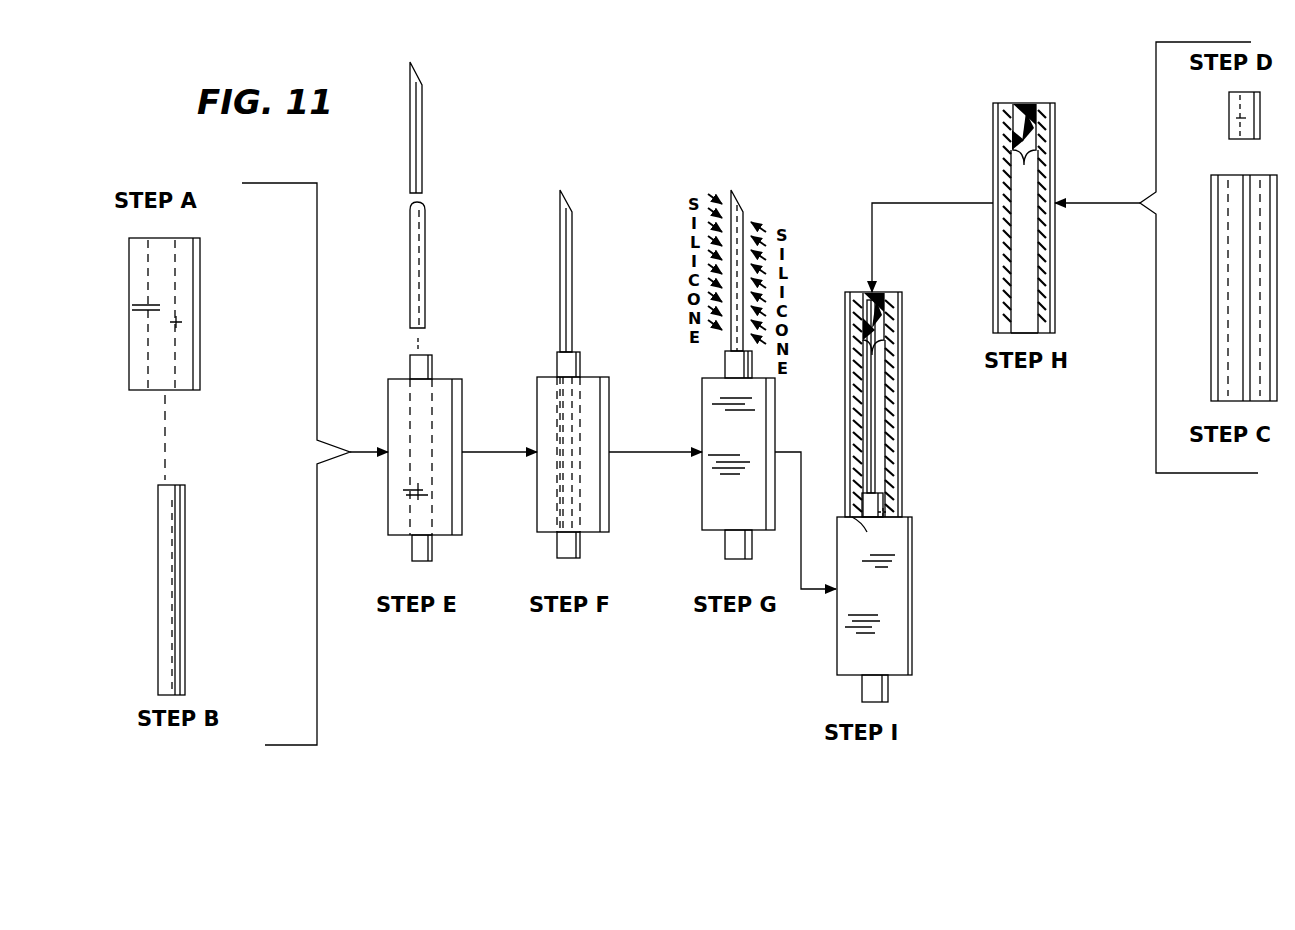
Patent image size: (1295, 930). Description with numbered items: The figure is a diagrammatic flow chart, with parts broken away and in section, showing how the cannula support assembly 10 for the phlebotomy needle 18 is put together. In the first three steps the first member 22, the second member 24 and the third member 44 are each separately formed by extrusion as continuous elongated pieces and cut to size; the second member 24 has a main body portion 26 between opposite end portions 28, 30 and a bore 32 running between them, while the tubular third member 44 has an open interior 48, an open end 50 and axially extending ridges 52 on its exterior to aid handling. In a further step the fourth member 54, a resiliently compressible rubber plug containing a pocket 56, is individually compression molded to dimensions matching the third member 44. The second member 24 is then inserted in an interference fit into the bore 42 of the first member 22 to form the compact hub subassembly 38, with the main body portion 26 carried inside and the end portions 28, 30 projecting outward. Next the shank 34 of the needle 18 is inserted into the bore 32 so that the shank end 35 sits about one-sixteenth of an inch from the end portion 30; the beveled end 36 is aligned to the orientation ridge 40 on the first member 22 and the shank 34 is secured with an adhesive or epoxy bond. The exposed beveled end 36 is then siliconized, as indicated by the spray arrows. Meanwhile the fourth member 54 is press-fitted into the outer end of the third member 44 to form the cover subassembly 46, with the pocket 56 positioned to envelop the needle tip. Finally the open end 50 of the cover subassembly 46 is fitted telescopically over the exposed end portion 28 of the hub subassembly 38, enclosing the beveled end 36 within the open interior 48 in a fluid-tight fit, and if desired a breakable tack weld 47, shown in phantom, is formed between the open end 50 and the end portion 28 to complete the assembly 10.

The cannula support assembly 10 is at (936, 561).
The phlebotomy needle 18 is at (422, 172).
The first member 22 is at (135, 330).
The second member 24 is at (165, 582).
The main body portion 26 is at (177, 617).
The end portion 28 is at (176, 490).
The end portion 30 is at (180, 699).
The bore 32 is at (560, 441).
The shank 34 is at (424, 306).
The shank end 35 is at (575, 562).
The beveled end 36 is at (422, 86).
The hub subassembly 38 is at (958, 600).
The ridge 40 is at (612, 441).
The bore 42 is at (160, 252).
The third member 44 is at (1046, 266).
The cover subassembly 46 is at (1068, 181).
The tack weld 47 is at (898, 512).
The open interior 48 is at (1001, 177).
The open end 50 is at (1022, 320).
The ridges 52 is at (848, 462).
The fourth member 54 is at (1025, 108).
The pocket 56 is at (1035, 131).